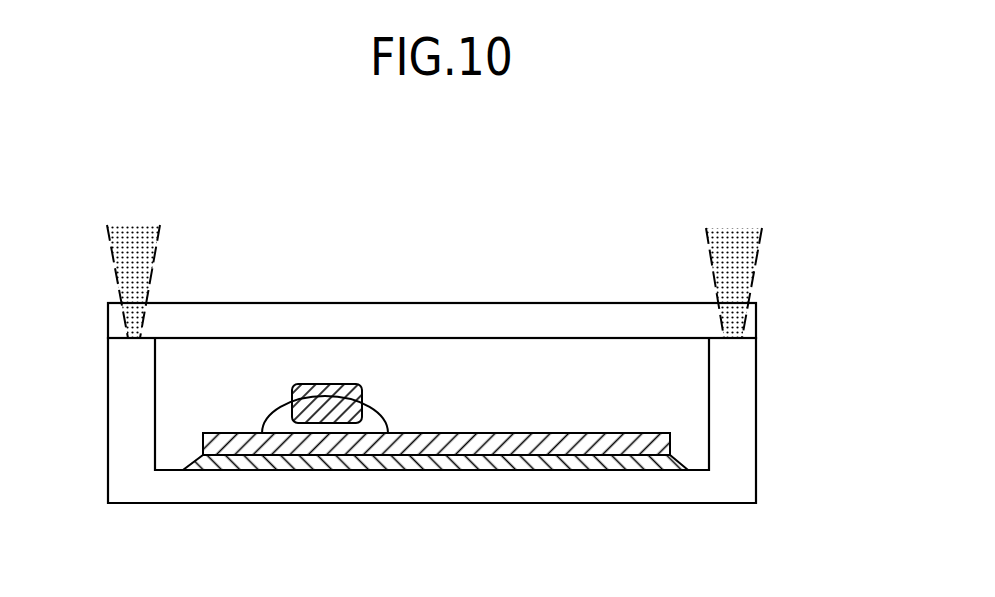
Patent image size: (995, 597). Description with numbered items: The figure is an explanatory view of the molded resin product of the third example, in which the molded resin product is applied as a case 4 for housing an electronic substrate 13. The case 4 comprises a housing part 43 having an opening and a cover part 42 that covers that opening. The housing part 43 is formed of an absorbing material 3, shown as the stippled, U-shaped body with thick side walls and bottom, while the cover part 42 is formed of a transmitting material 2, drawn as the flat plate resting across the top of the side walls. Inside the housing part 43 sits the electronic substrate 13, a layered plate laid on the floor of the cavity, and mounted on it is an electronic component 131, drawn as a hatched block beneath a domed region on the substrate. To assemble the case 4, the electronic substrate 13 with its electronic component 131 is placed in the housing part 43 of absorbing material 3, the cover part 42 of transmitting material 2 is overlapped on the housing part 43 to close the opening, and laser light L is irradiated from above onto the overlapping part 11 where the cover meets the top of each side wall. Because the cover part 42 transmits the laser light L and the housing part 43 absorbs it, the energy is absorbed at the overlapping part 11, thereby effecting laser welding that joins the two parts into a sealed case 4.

The case 4 is at (413, 243).
The transmitting material 2 is at (508, 318).
The cover part 42 is at (432, 269).
The absorbing material 3 is at (162, 487).
The housing part 43 is at (394, 464).
The overlapping part 11 is at (122, 356).
The electronic substrate 13 is at (500, 440).
The electronic component 131 is at (327, 395).
The laser light L is at (127, 249).